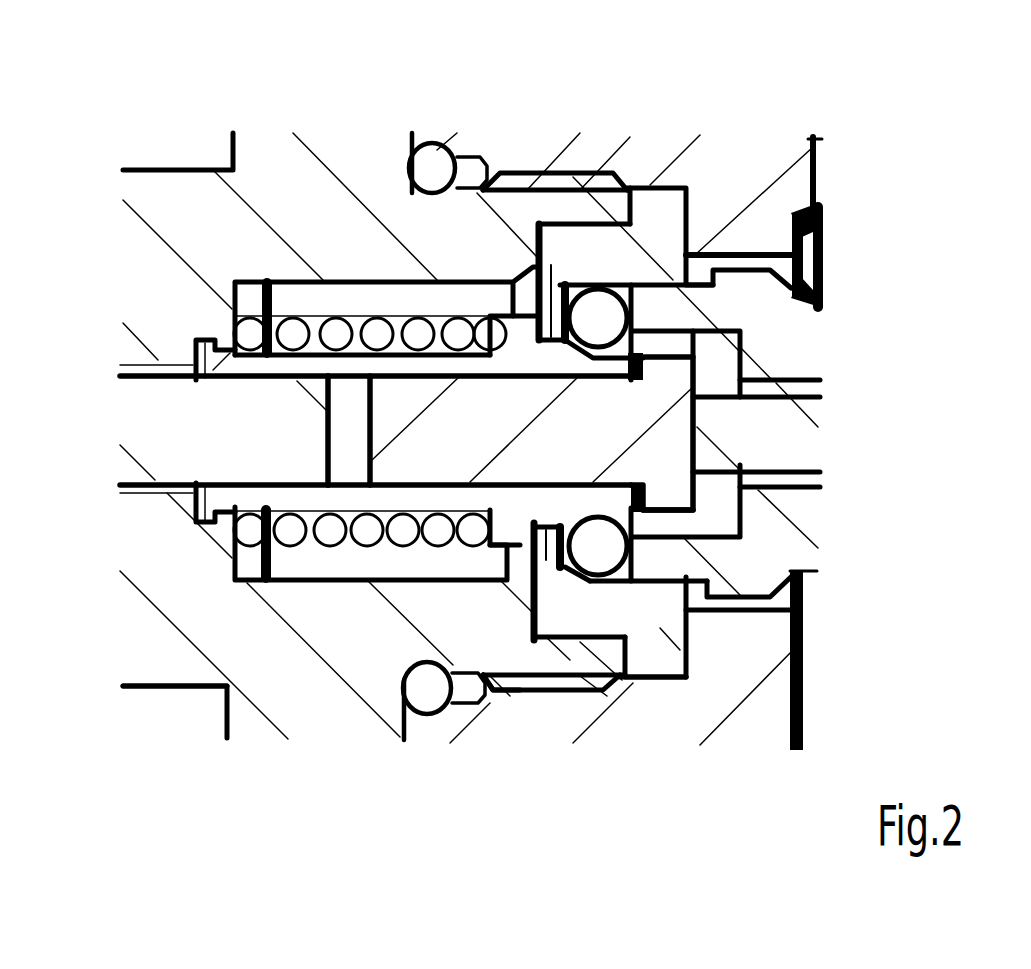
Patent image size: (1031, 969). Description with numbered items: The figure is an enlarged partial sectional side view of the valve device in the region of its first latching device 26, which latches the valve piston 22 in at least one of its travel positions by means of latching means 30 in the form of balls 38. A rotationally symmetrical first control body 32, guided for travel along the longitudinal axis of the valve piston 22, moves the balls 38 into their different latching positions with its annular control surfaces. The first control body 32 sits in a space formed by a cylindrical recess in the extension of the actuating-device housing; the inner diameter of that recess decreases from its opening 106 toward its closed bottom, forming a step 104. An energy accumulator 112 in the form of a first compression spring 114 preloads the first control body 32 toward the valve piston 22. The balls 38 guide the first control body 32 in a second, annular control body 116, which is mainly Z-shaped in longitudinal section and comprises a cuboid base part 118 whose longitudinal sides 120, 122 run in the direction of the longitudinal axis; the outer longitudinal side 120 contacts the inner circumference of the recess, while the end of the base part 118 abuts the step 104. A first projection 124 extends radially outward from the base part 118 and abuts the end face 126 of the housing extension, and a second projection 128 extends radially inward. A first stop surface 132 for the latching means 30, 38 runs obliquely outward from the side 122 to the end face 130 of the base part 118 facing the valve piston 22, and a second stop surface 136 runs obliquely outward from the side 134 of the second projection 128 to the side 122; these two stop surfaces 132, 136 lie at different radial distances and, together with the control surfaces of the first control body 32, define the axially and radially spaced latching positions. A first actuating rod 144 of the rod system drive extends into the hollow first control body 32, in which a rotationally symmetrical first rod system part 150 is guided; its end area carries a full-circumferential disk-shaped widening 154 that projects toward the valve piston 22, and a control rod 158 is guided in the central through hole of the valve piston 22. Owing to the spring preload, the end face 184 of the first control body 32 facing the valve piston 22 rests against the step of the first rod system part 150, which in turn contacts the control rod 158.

The valve piston 22 is at (743, 283).
The first latching device 26 is at (515, 795).
The latching means 30 is at (583, 196).
The balls 38 is at (593, 310).
The first control body 32 is at (352, 365).
The step 104 is at (585, 560).
The opening 106 is at (606, 195).
The end face 126 is at (638, 185).
The energy accumulator 112 is at (346, 663).
The first compression spring 114 is at (320, 527).
The second control body 116 is at (690, 205).
The base part 118 is at (603, 610).
The longitudinal side 120 is at (572, 645).
The longitudinal side 122 is at (631, 680).
The first projection 124 is at (637, 682).
The second projection 128 is at (542, 648).
The side 134 is at (548, 560).
The end face 130 is at (690, 650).
The first stop surface 132 is at (650, 598).
The second stop surface 136 is at (585, 565).
The first actuating rod 144 is at (270, 480).
The first rod system part 150 is at (600, 453).
The widening 154 is at (673, 495).
The control rod 158 is at (797, 453).
The end face 184 is at (643, 367).